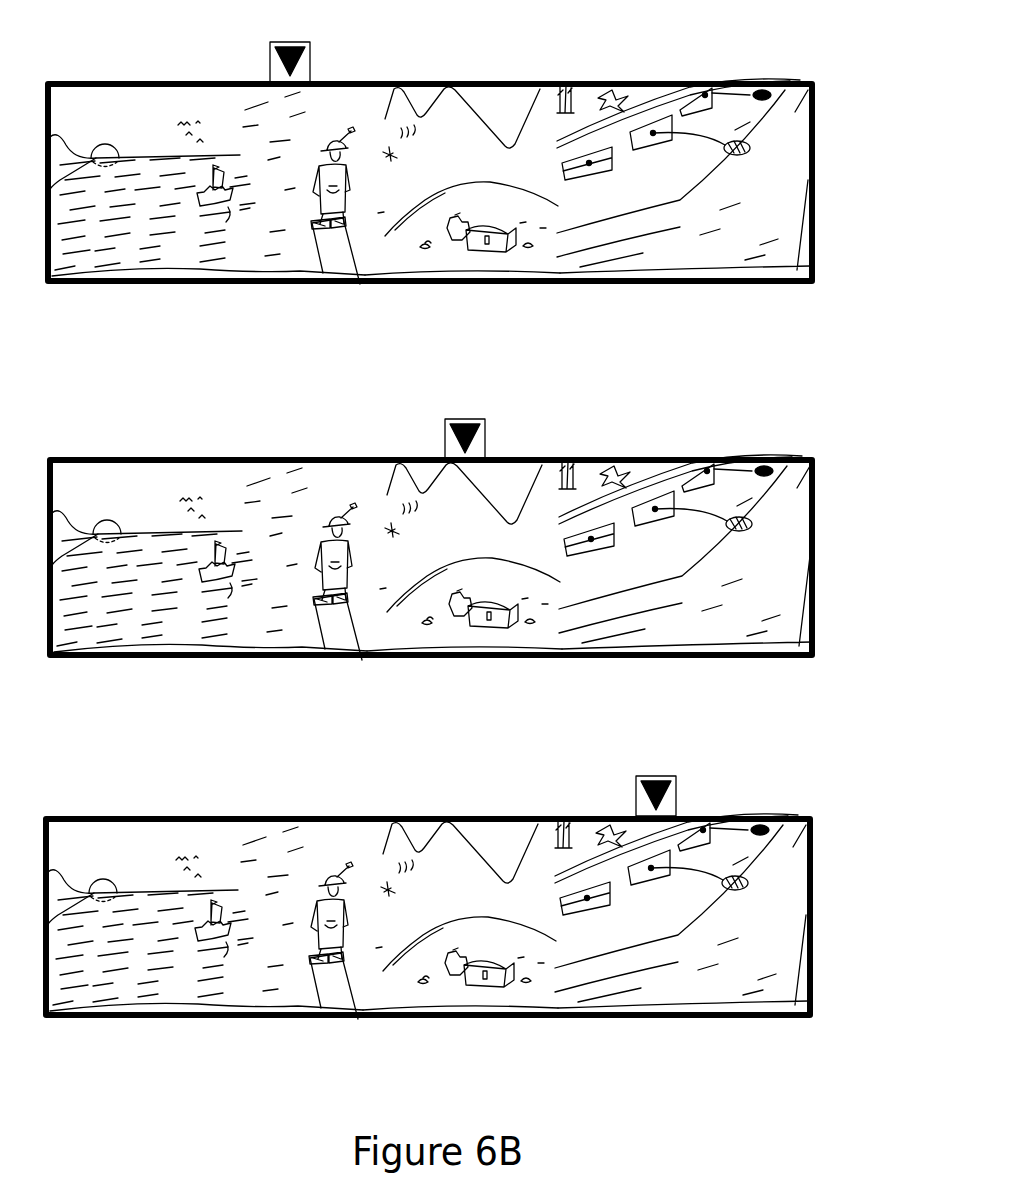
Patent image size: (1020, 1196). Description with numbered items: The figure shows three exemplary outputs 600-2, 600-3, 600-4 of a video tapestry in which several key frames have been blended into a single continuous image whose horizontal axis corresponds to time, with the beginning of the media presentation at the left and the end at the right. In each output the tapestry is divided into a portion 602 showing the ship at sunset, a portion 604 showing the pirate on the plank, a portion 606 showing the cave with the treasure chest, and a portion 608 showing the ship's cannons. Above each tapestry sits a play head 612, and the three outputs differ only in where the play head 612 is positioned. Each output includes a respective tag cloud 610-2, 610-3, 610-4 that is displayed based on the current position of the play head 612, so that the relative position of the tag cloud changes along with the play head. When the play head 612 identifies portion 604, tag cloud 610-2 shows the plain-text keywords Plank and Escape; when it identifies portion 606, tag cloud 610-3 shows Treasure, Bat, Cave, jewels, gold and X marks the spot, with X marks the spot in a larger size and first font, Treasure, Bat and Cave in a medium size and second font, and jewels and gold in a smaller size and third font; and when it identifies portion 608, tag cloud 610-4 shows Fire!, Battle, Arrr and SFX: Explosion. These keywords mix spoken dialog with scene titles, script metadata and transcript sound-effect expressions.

The exemplary output 600-2 is at (718, 350).
The exemplary output 600-3 is at (752, 677).
The exemplary output 600-4 is at (282, 1073).
The portion of tapestry 602 is at (258, 288).
The portion of tapestry 604 is at (278, 287).
The portion of tapestry 606 is at (438, 415).
The portion of tapestry 608 is at (770, 287).
The tag cloud 610-2 is at (428, 348).
The tag cloud 610-3 is at (603, 703).
The tag cloud 610-4 is at (798, 1058).
The play head 612 is at (347, 13).